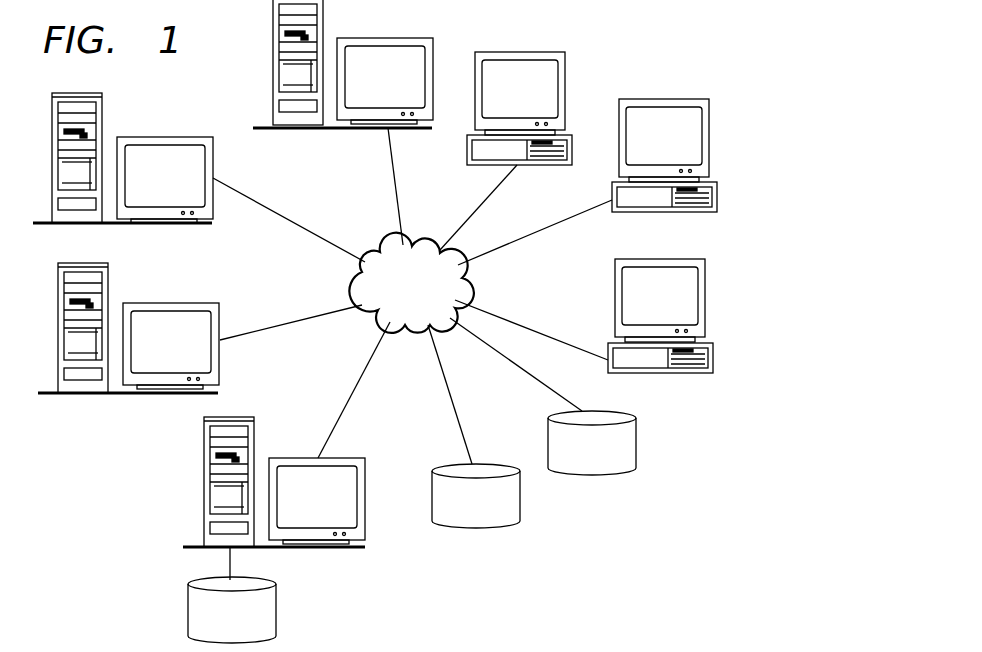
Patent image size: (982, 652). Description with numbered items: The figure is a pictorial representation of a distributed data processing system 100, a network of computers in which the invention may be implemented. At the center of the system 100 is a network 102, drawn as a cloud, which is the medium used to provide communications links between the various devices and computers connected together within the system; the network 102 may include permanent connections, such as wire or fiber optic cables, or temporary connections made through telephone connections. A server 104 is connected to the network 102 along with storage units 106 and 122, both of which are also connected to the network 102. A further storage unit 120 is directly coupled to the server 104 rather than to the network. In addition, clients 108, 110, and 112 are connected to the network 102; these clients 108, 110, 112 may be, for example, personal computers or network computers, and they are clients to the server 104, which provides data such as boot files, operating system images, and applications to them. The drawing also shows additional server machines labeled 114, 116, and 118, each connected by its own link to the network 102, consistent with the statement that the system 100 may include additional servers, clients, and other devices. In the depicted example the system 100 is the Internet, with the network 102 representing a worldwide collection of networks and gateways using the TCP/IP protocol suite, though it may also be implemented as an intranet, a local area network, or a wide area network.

The distributed data processing system 100 is at (777, 96).
The network 102 is at (390, 299).
The server 104 is at (294, 511).
The storage unit 106 is at (572, 459).
The client 108 is at (500, 103).
The client 110 is at (644, 150).
The client 112 is at (641, 310).
The server 114 is at (148, 356).
The server 116 is at (142, 190).
The server 118 is at (362, 91).
The storage unit 120 is at (212, 627).
The storage unit 122 is at (456, 512).